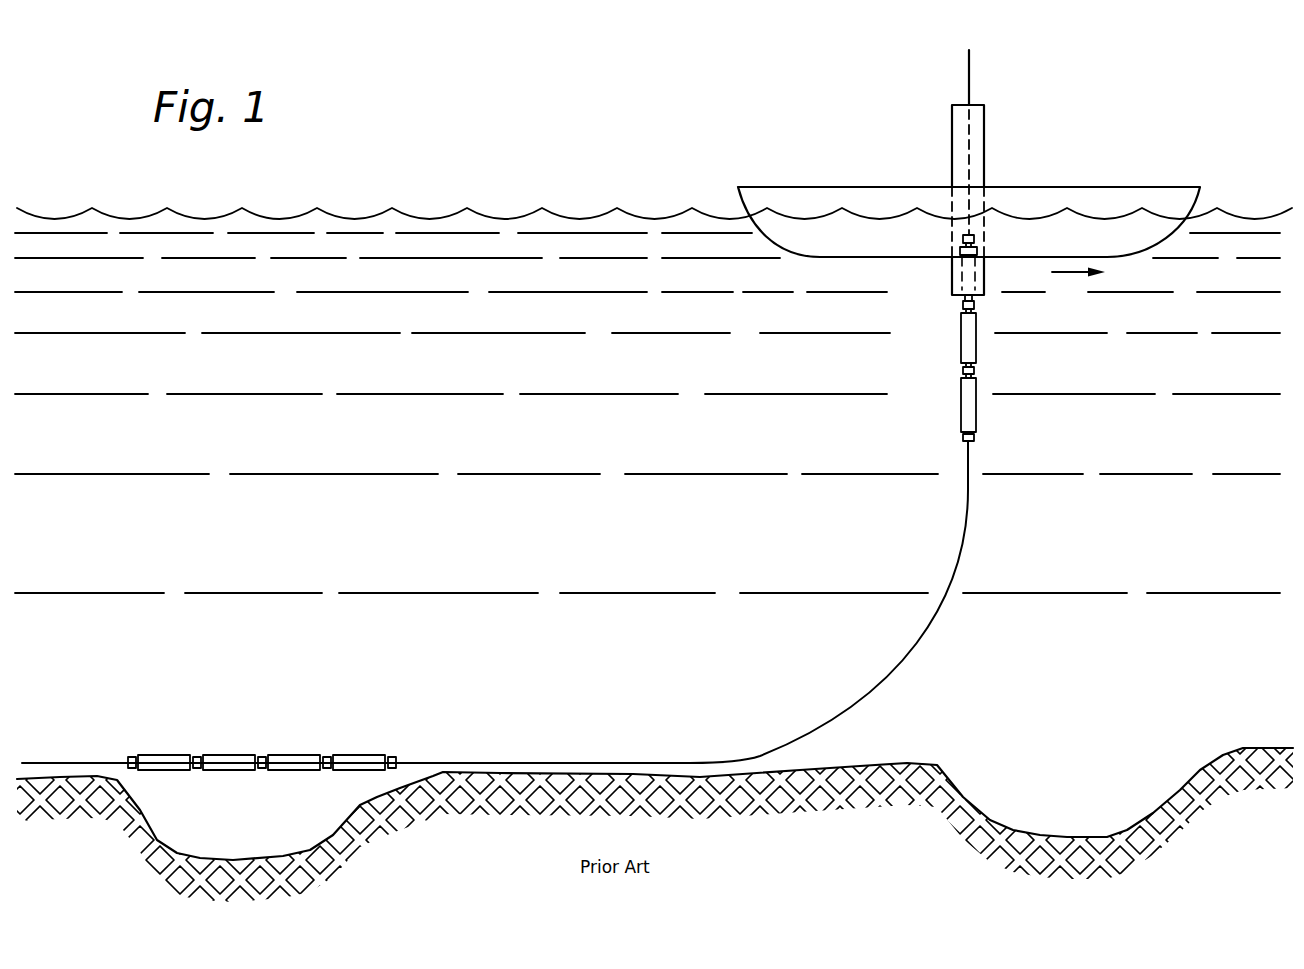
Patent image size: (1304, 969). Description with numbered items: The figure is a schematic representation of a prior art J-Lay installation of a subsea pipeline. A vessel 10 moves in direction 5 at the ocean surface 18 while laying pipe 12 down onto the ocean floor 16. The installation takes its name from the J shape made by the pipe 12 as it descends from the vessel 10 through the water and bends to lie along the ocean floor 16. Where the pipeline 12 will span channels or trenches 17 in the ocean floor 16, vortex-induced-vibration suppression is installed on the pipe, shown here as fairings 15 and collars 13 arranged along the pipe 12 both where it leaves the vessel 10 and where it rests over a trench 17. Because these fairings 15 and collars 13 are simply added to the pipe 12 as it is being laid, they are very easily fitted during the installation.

The direction 5 is at (1070, 273).
The vessel 10 is at (1093, 187).
The pipe 12 is at (917, 640).
The collars 13 is at (962, 303).
The fairings 15 is at (961, 338).
The ocean floor 16 is at (907, 763).
The channels/trenches 17 is at (248, 830).
The ocean surface 18 is at (338, 217).